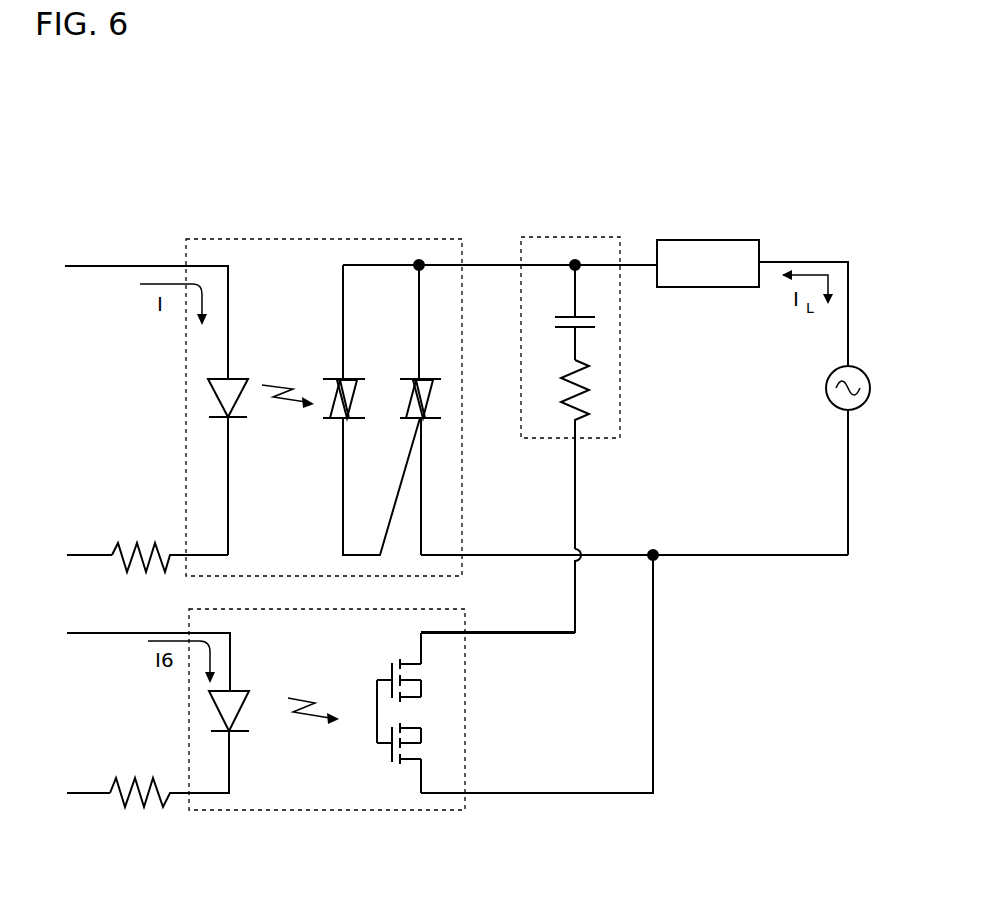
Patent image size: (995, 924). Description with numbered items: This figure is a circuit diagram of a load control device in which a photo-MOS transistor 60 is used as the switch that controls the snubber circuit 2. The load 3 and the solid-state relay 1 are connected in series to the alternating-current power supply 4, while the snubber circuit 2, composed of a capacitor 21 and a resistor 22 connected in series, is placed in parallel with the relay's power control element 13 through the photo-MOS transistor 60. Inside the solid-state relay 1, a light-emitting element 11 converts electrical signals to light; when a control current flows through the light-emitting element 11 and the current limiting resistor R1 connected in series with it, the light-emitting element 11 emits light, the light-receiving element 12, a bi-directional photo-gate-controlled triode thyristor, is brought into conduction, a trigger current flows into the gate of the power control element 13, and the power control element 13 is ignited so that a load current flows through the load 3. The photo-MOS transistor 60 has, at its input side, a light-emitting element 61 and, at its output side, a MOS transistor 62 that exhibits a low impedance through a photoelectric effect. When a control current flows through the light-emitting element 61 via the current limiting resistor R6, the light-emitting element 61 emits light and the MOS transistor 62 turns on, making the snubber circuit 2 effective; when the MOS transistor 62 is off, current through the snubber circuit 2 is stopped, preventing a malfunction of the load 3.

The solid-state relay 1 is at (358, 238).
The snubber circuit 2 is at (606, 233).
The load 3 is at (735, 240).
The alternating-current power supply 4 is at (826, 388).
The light-emitting element 11 is at (213, 399).
The light-receiving element 12 is at (331, 378).
The power control element 13 is at (409, 378).
The capacitor 21 is at (596, 322).
The resistor 22 is at (590, 385).
The photo-MOS transistor 60 is at (365, 812).
The light-emitting element 61 is at (247, 720).
The MOS transistor 62 is at (373, 692).
The current limiting resistor R1 is at (140, 543).
The current limiting resistor R6 is at (140, 778).